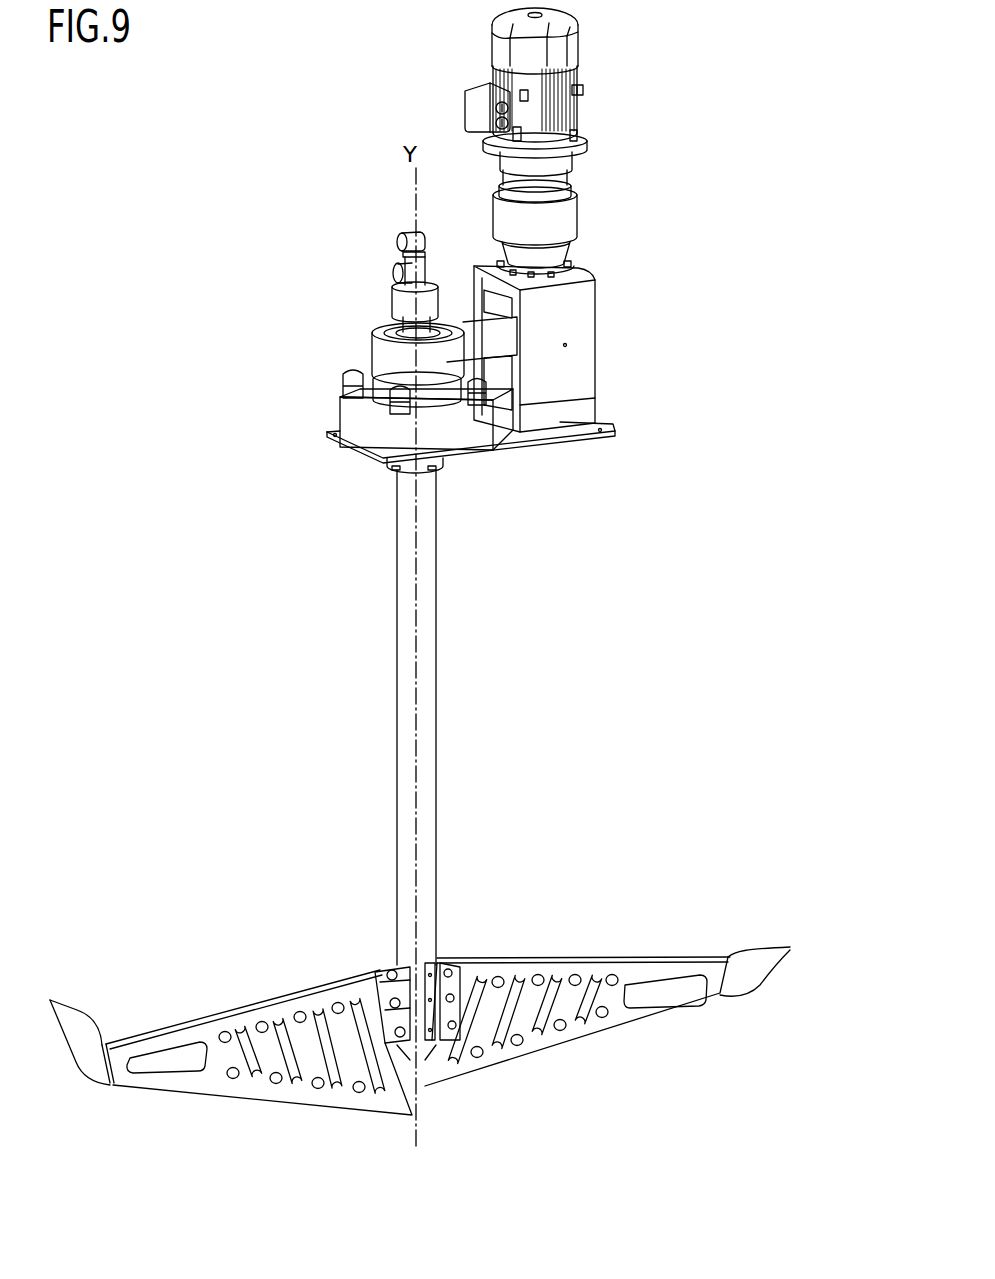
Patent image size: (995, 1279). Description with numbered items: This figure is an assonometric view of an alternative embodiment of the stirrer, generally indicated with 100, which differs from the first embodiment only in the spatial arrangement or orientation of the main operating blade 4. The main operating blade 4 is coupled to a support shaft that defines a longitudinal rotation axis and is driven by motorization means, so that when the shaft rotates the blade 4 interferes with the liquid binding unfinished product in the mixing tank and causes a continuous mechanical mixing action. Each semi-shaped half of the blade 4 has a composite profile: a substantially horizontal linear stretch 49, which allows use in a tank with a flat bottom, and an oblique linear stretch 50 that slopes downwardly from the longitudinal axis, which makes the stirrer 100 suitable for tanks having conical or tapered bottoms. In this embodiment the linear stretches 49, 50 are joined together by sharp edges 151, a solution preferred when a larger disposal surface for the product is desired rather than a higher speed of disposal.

The stirrer 100 is at (690, 137).
The main operating blade 4 is at (677, 892).
The substantially horizontal linear stretch 49 is at (252, 1002).
The oblique linear stretch 50 is at (248, 1098).
The sharp edges 151 is at (58, 1000).